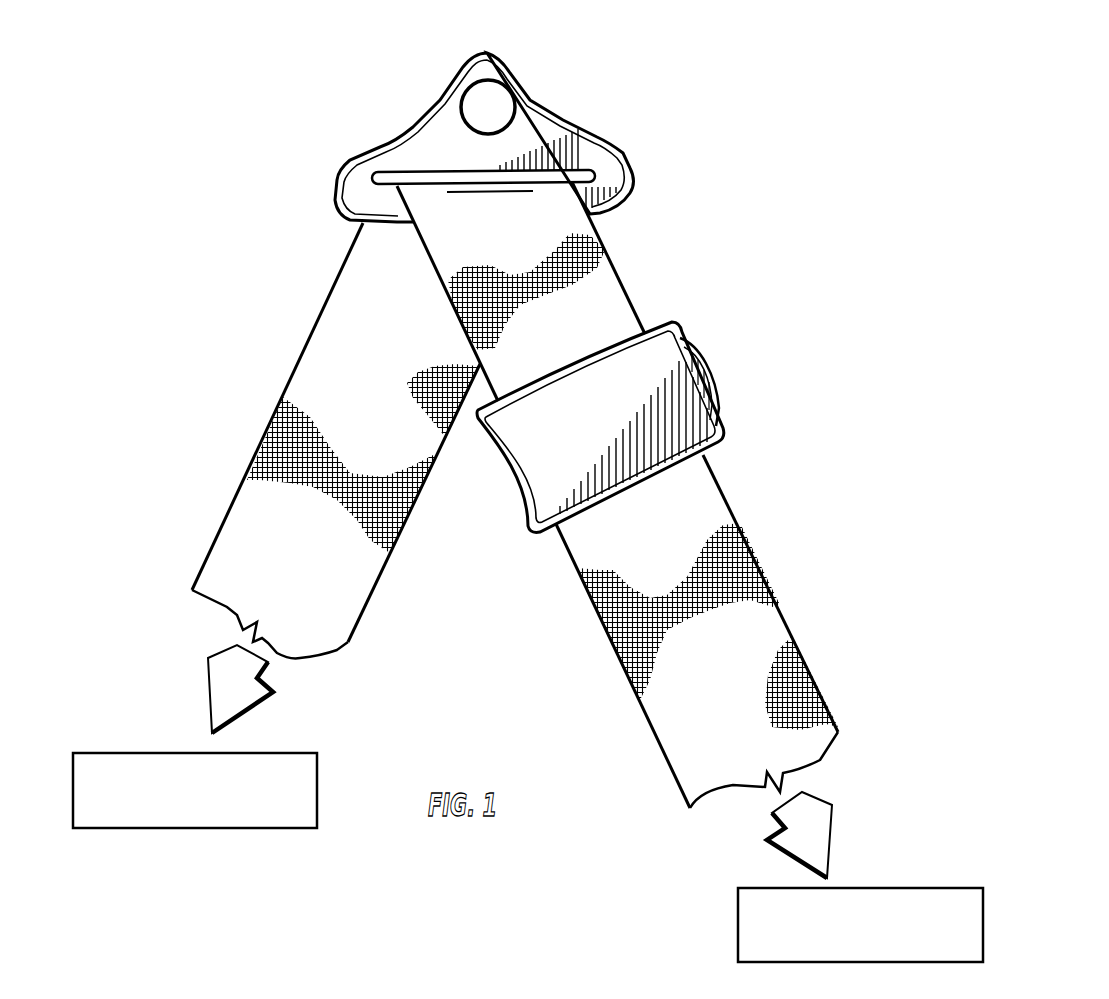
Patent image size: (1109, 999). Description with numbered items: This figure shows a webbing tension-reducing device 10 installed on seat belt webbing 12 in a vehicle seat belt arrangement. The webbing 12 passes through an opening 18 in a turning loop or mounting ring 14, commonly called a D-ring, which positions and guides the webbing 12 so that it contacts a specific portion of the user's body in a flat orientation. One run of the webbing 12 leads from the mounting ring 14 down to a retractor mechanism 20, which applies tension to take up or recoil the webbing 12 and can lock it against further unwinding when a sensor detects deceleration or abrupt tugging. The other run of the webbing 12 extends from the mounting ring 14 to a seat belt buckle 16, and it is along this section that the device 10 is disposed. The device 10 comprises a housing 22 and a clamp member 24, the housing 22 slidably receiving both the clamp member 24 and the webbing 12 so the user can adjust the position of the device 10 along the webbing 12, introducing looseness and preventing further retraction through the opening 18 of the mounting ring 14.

The device 10 is at (687, 323).
The webbing 12 is at (257, 447).
The mounting ring 14 is at (497, 52).
The seat belt buckle 16 is at (880, 887).
The opening 18 is at (588, 160).
The retractor mechanism 20 is at (133, 752).
The housing 22 is at (522, 515).
The clamp member 24 is at (718, 399).